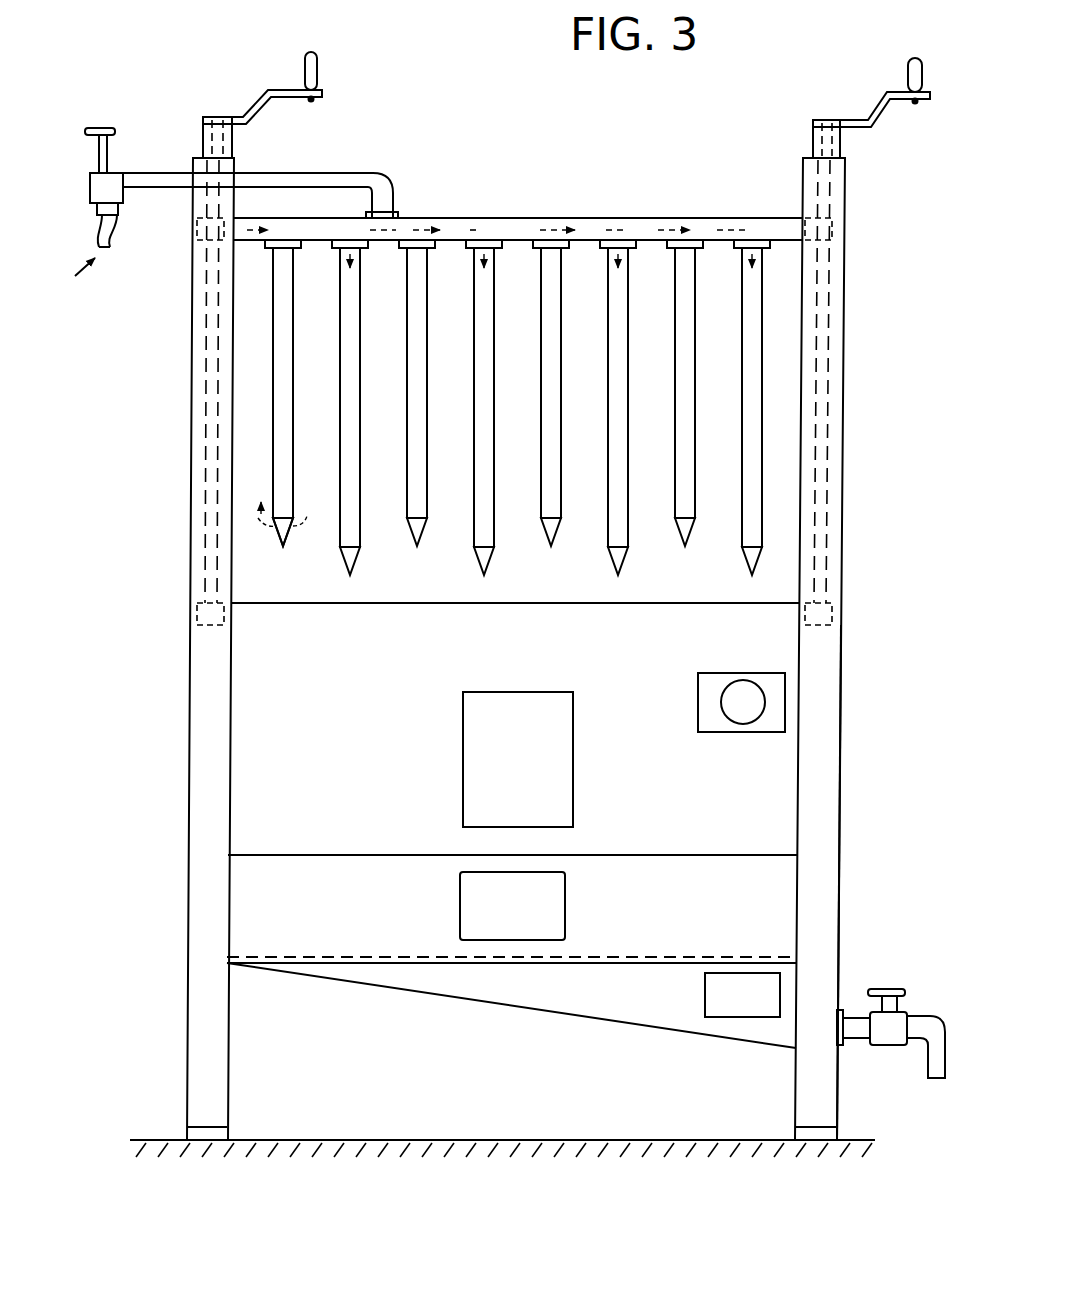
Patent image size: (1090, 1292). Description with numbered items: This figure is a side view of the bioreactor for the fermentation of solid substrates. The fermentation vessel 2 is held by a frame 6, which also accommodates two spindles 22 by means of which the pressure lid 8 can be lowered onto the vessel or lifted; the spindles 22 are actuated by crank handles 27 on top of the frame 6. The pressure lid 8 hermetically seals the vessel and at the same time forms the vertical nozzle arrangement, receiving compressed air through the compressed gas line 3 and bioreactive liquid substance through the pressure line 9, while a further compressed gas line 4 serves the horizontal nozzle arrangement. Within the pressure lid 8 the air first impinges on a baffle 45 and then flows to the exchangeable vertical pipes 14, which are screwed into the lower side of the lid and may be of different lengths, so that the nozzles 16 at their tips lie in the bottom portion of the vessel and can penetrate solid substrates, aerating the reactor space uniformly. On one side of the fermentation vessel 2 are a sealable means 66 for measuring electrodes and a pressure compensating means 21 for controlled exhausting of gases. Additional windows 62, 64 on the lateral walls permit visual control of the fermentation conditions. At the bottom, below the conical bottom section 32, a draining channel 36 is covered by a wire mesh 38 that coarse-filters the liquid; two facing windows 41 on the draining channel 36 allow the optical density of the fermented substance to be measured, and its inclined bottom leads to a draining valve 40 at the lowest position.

The fermentation vessel 2 is at (245, 765).
The compressed gas line 3 is at (115, 245).
The pressure line 9 is at (236, 202).
The pressure lid 8 is at (318, 233).
The vertical pipes 14 is at (750, 420).
The nozzles 16 is at (266, 535).
The spindles 22 is at (207, 443).
The crank handles 27 is at (262, 97).
The baffle 45 is at (380, 243).
The compressed gas line 4 is at (285, 511).
The frame 6 is at (825, 722).
The window 62 is at (470, 748).
The sealable means for measuring electrodes 66 is at (763, 733).
The pressure compensating means 21 is at (741, 702).
The conical bottom section 32 is at (253, 900).
The window 64 is at (468, 902).
The wire mesh 38 is at (730, 955).
The windows 41 is at (763, 988).
The draining channel 36 is at (405, 995).
The draining valve 40 is at (880, 1032).